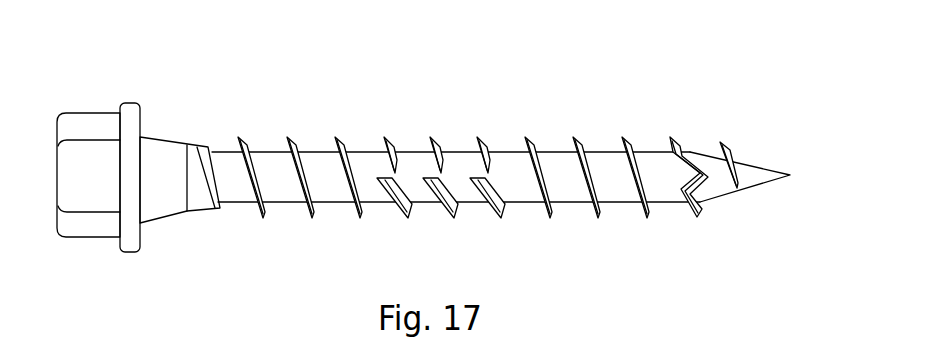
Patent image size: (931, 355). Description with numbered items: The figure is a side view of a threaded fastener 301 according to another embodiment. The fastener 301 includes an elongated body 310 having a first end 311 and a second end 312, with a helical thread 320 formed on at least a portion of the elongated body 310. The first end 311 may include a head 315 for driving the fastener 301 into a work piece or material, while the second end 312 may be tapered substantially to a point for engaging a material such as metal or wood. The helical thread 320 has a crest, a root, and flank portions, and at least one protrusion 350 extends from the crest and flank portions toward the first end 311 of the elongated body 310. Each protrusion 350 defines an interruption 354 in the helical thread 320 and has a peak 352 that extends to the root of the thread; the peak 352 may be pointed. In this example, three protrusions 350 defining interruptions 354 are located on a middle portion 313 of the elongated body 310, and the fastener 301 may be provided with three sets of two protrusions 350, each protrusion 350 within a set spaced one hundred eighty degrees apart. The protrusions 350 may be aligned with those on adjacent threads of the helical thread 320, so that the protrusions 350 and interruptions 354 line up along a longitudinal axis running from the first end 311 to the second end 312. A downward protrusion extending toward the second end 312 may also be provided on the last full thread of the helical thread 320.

The fastener 301 is at (464, 121).
The elongated body 310 is at (218, 150).
The first end 311 is at (162, 121).
The second end 312 is at (751, 156).
The middle portion 313 is at (411, 128).
The head 315 is at (97, 125).
The helical thread 320 is at (638, 188).
The protrusion 350 is at (475, 180).
The peak 352 is at (423, 178).
The interruption 354 is at (392, 172).